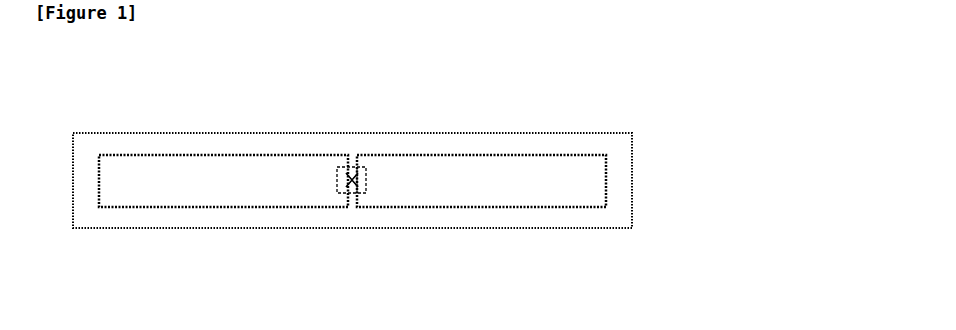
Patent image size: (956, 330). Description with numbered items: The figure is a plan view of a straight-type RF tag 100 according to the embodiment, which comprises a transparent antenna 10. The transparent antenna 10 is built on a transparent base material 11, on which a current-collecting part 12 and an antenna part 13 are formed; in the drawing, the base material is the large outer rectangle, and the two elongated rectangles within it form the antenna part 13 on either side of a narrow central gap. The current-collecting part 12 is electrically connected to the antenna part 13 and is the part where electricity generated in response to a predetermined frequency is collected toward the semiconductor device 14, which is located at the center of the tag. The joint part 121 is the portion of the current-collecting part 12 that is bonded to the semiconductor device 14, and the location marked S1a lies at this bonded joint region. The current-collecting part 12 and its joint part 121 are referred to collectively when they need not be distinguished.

The RF tag 100 is at (125, 77).
The transparent antenna 10 is at (636, 145).
The transparent base material 11 is at (607, 190).
The current-collecting part 12 is at (494, 140).
The joint part 121 is at (351, 168).
The antenna part 13 is at (505, 186).
The semiconductor device 14 is at (352, 187).
The joint surface S1a is at (359, 189).